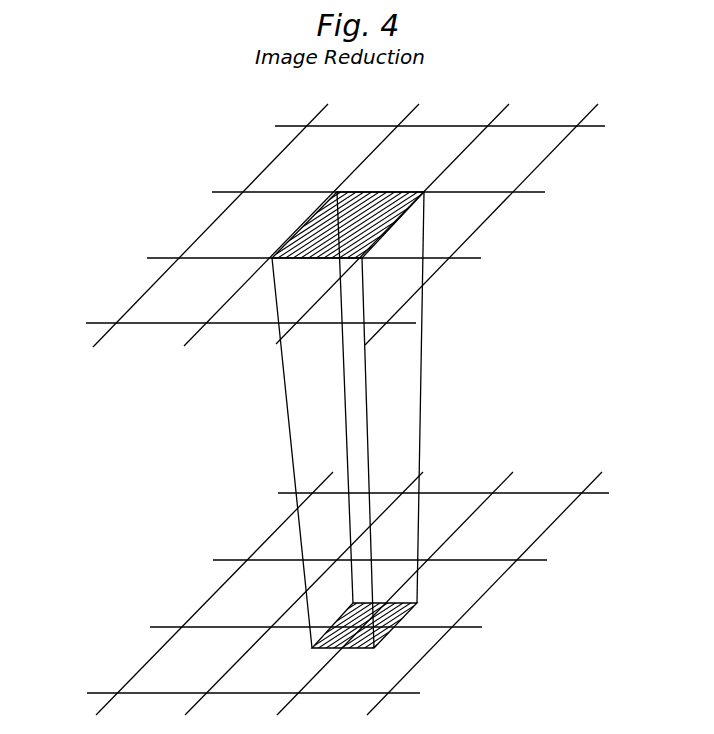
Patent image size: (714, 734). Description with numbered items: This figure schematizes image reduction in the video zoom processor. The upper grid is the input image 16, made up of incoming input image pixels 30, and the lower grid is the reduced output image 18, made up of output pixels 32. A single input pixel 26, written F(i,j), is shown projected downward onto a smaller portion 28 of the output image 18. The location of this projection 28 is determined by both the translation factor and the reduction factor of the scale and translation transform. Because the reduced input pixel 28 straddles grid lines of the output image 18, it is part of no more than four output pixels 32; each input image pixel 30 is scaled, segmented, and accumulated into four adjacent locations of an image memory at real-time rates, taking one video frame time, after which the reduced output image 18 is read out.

The input image 16 is at (325, 225).
The output image 18 is at (321, 593).
The input pixel 26 is at (375, 200).
The reduced input pixel 28 is at (385, 628).
The input image pixel 30 is at (530, 160).
The output pixels 32 is at (525, 533).